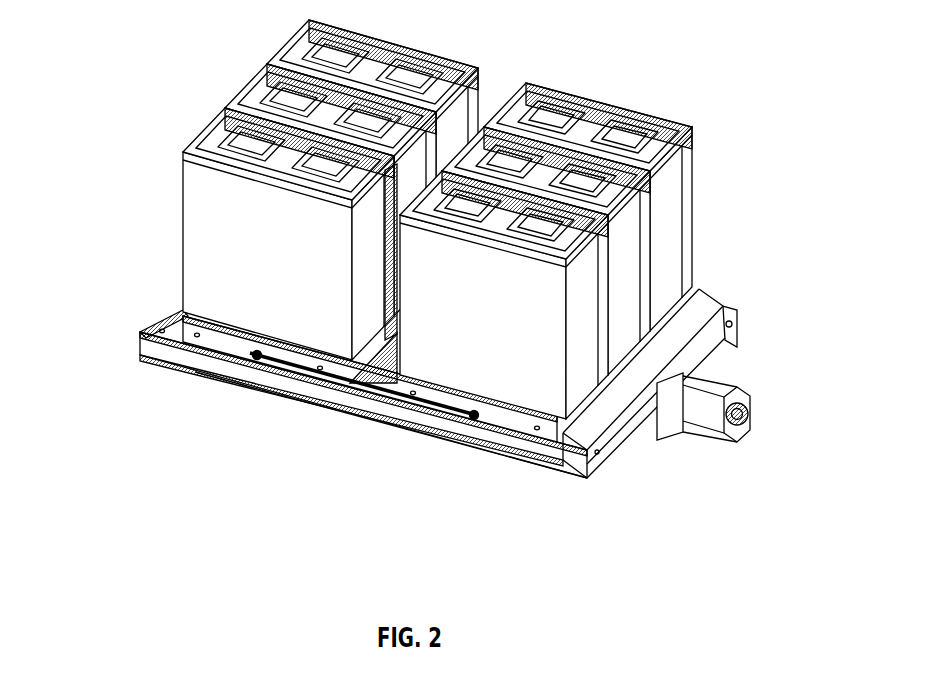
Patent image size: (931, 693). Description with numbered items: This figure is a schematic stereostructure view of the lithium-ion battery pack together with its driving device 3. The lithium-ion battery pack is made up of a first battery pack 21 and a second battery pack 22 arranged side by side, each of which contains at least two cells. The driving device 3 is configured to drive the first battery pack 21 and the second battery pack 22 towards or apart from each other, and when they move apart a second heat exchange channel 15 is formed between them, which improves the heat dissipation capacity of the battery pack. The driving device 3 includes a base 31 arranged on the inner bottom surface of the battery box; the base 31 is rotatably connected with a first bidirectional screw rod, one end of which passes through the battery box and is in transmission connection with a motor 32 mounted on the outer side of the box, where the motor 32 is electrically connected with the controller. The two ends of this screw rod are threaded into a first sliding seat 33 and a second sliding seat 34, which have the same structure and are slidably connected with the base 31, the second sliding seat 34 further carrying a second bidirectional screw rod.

The driving device 3 is at (412, 438).
The second heat exchange channel 15 is at (483, 100).
The first battery pack 21 is at (243, 82).
The second battery pack 22 is at (598, 112).
The base 31 is at (170, 362).
The motor 32 is at (665, 426).
The first sliding seat 33 is at (240, 353).
The second sliding seat 34 is at (525, 426).